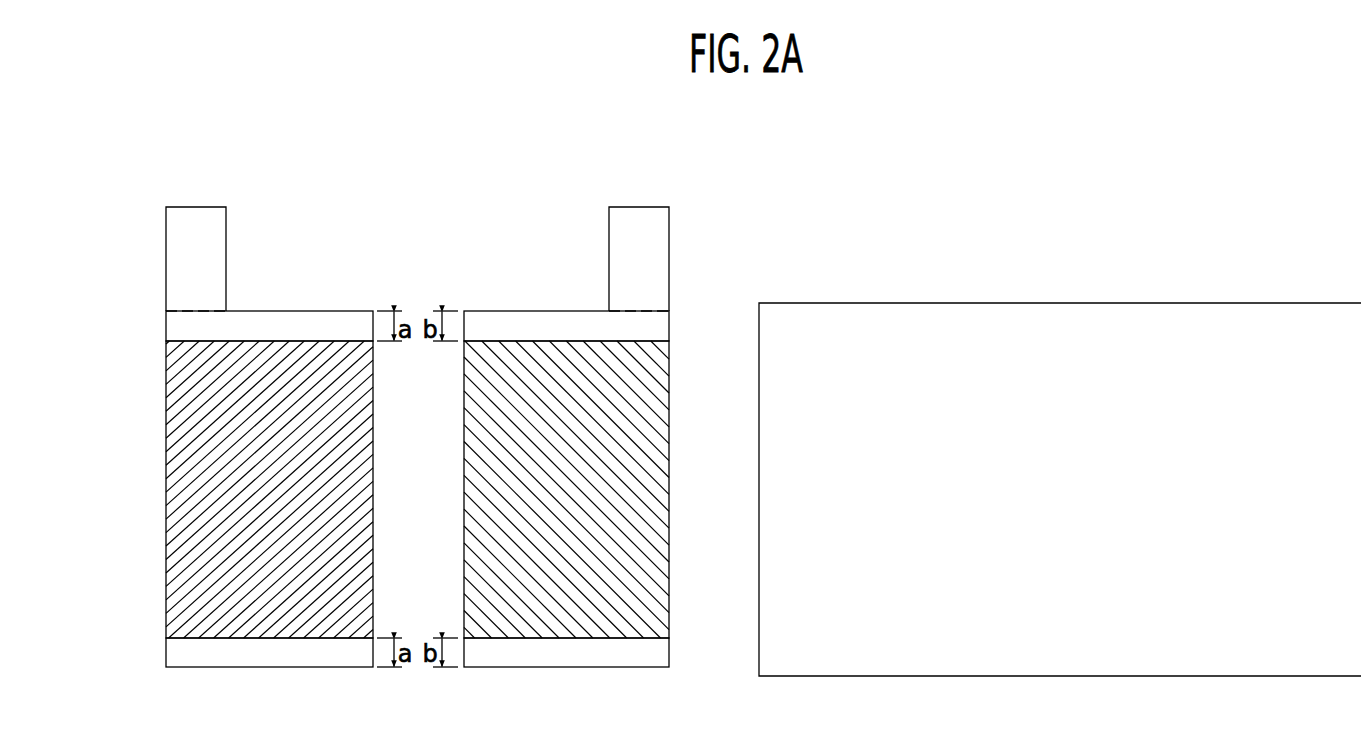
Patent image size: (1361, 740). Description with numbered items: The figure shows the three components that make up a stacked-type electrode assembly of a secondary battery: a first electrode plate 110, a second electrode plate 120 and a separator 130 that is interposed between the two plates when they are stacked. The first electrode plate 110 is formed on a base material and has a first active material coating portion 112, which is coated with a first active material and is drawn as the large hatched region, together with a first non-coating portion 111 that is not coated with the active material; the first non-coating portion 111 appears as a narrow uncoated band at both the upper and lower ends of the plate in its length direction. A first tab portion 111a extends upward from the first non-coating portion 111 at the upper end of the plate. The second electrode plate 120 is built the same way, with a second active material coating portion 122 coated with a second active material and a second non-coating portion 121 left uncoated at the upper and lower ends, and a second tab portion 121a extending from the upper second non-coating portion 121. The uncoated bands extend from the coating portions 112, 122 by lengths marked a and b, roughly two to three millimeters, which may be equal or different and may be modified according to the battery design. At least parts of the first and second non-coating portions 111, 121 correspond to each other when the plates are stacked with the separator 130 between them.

The first electrode plate 110 is at (323, 175).
The first non-coating portion 111 is at (178, 332).
The first tab portion 111a is at (178, 254).
The first active material coating portion 112 is at (178, 533).
The second electrode plate 120 is at (660, 175).
The second non-coating portion 121 is at (660, 325).
The second tab portion 121a is at (660, 255).
The second active material coating portion 122 is at (660, 533).
The separator 130 is at (1104, 253).